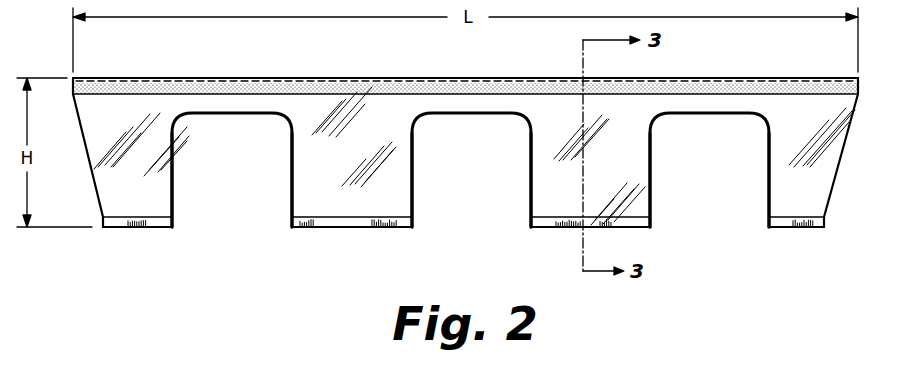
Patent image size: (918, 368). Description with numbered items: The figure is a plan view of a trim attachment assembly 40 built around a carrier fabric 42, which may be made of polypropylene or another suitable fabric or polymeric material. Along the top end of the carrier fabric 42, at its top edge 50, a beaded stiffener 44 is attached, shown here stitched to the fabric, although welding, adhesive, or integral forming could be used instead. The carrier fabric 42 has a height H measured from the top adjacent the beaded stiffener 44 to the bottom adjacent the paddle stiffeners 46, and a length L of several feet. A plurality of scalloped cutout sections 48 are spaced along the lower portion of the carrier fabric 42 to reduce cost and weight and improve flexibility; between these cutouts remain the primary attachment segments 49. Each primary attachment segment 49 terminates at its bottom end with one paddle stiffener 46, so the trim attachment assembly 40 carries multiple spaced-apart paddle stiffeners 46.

The trim attachment assembly 40 is at (330, 57).
The carrier fabric 42 is at (371, 118).
The beaded stiffener 44 is at (498, 88).
The paddle stiffener 46 is at (835, 265).
The cutout section 48 is at (720, 169).
The primary attachment segment 49 is at (862, 213).
The top edge 50 is at (740, 78).